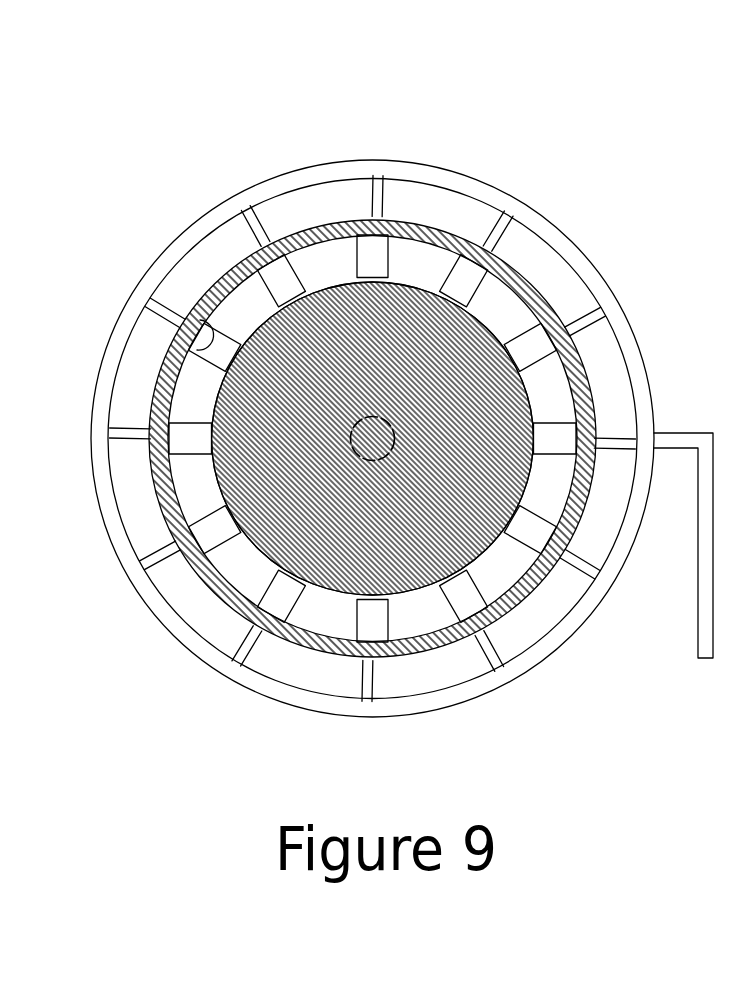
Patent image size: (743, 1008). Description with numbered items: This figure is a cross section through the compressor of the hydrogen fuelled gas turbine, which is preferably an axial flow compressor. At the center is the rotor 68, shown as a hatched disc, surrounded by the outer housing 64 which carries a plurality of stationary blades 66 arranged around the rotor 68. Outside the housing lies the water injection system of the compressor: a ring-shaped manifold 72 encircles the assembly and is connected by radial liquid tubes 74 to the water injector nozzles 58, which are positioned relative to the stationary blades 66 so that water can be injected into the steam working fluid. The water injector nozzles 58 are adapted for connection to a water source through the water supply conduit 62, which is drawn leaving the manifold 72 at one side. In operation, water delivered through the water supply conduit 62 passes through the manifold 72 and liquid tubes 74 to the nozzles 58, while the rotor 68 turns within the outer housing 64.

The water injector nozzles 58 is at (165, 359).
The water supply conduit 62 is at (708, 665).
The outer housing 64 is at (152, 487).
The stationary blades 66 is at (392, 255).
The rotor 68 is at (490, 274).
The manifold 72 is at (265, 175).
The liquid tubes 74 is at (230, 635).